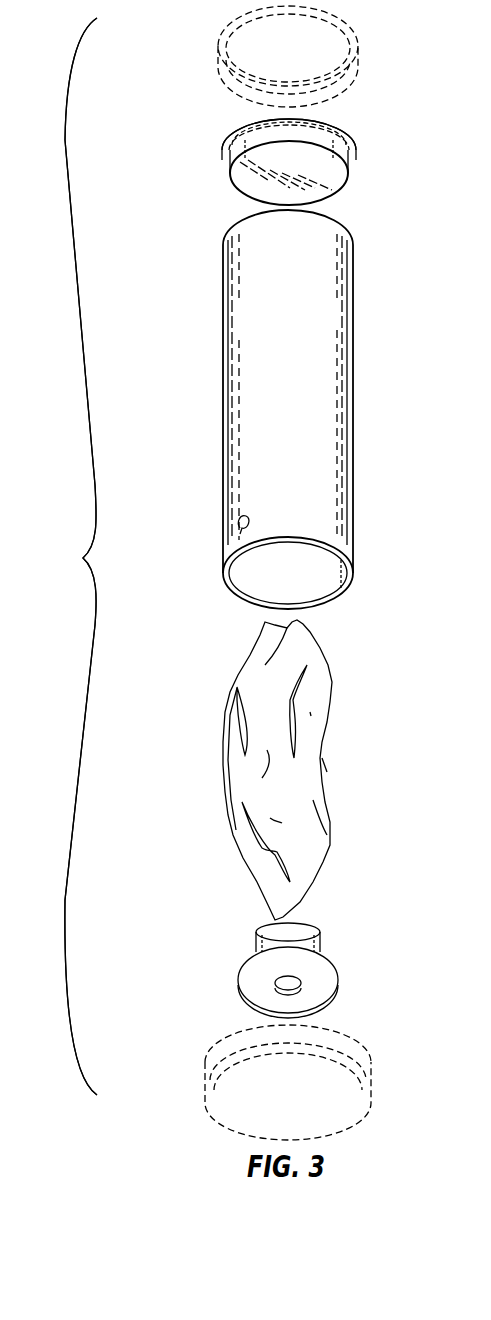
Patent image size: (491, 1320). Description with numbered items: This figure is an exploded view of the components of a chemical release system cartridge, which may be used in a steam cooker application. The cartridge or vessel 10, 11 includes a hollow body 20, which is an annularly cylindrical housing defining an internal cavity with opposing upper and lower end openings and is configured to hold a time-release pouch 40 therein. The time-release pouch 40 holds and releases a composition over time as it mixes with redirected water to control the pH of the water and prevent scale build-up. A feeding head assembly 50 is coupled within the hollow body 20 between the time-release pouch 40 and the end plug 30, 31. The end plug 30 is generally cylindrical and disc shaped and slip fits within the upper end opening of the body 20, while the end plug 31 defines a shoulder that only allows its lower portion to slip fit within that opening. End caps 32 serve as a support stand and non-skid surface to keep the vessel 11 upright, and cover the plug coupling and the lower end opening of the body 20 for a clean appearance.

The cartridge 10 is at (62, 556).
The cartridge 11 is at (81, 556).
The body 20 is at (335, 342).
The end plug 30 is at (345, 150).
The end plug 31 is at (240, 128).
The end cap 32 is at (222, 33).
The time-release pouch 40 is at (322, 760).
The feeding head assembly 50 is at (330, 952).